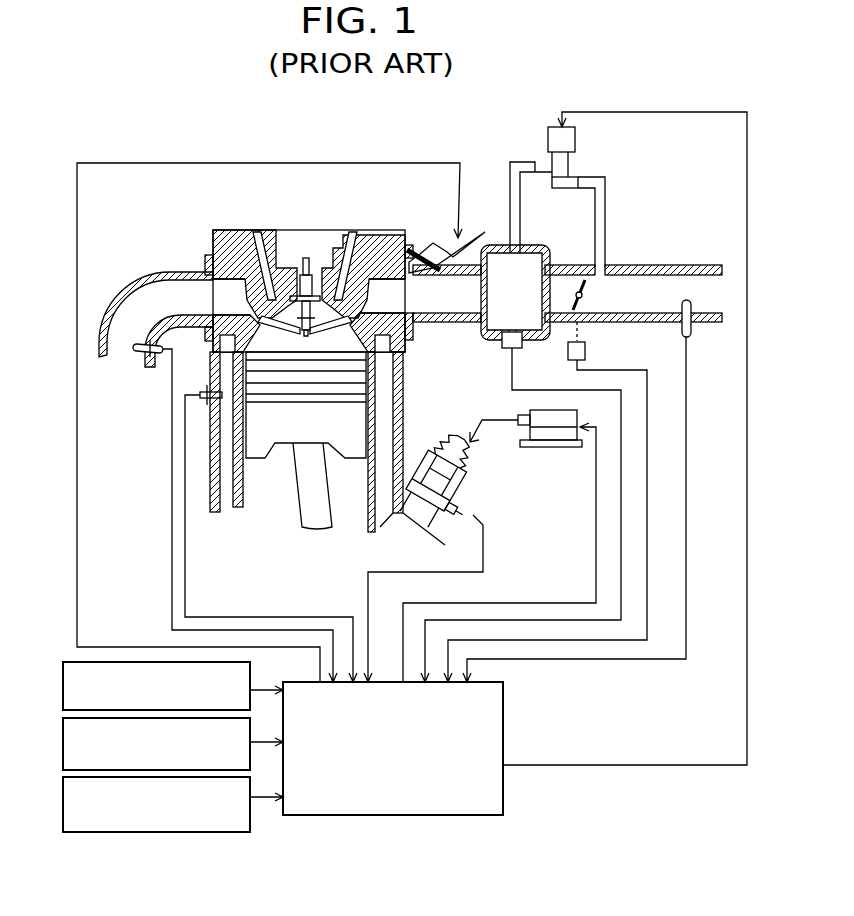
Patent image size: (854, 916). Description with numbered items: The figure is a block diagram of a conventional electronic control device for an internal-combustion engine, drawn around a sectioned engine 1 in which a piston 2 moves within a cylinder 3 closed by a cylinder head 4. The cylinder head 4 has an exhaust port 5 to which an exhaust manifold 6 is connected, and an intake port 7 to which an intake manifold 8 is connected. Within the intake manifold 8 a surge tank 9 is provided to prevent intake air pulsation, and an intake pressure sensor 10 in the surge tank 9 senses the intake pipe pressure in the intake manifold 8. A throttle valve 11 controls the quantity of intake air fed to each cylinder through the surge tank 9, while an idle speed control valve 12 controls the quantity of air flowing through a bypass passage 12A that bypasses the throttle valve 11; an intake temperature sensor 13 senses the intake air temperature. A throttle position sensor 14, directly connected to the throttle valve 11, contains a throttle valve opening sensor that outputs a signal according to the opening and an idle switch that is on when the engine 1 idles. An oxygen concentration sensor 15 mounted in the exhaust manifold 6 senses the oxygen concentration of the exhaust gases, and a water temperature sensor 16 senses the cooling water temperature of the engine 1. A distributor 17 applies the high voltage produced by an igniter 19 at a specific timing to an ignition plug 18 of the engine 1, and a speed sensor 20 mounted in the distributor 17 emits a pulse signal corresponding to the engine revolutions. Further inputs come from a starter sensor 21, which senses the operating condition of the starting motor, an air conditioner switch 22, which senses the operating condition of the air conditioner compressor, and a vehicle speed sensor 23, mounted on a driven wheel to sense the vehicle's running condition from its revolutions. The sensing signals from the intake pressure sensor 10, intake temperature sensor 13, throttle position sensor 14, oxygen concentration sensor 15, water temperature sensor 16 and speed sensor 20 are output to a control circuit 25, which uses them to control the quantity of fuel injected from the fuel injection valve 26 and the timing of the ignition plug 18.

The engine 1 is at (309, 229).
The piston 2 is at (352, 437).
The cylinder 3 is at (405, 393).
The cylinder head 4 is at (245, 233).
The exhaust port 5 is at (218, 297).
The exhaust manifold 6 is at (142, 275).
The intake port 7 is at (397, 298).
The intake manifold 8 is at (447, 322).
The surge tank 9 is at (497, 342).
The intake pressure sensor 10 is at (503, 350).
The throttle valve 11 is at (578, 280).
The idle speed control valve 12 is at (575, 137).
The bypass passage 12A is at (510, 185).
The intake temperature sensor 13 is at (693, 325).
The throttle position sensor 14 is at (588, 348).
The oxygen concentration sensor 15 is at (150, 358).
The water temperature sensor 16 is at (186, 390).
The distributor 17 is at (452, 443).
The ignition plug 18 is at (325, 253).
The igniter 19 is at (540, 447).
The speed sensor 20 is at (476, 502).
The starter sensor 21 is at (250, 677).
The air conditioner switch 22 is at (250, 752).
The vehicle speed sensor 23 is at (250, 818).
The control circuit 25 is at (504, 740).
The fuel injection valve 26 is at (443, 257).